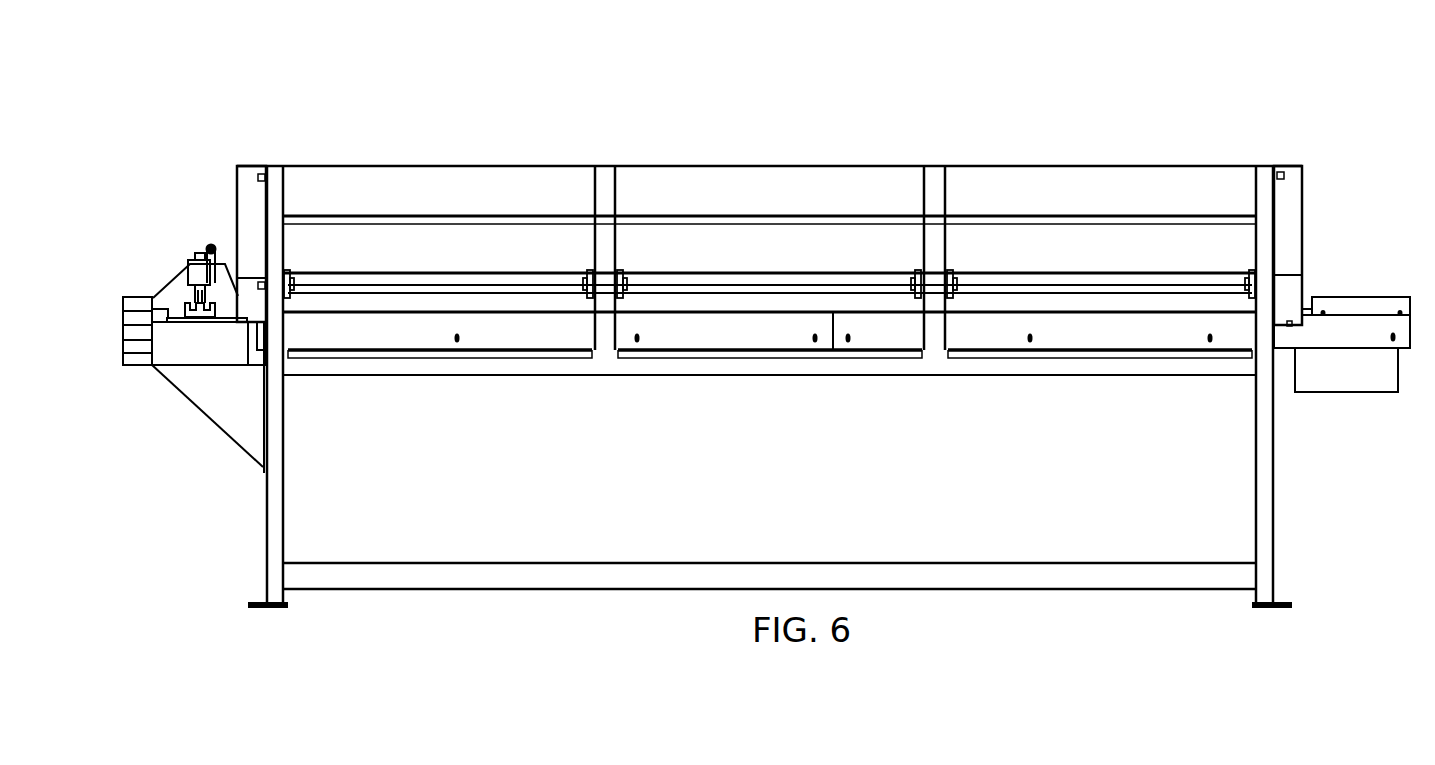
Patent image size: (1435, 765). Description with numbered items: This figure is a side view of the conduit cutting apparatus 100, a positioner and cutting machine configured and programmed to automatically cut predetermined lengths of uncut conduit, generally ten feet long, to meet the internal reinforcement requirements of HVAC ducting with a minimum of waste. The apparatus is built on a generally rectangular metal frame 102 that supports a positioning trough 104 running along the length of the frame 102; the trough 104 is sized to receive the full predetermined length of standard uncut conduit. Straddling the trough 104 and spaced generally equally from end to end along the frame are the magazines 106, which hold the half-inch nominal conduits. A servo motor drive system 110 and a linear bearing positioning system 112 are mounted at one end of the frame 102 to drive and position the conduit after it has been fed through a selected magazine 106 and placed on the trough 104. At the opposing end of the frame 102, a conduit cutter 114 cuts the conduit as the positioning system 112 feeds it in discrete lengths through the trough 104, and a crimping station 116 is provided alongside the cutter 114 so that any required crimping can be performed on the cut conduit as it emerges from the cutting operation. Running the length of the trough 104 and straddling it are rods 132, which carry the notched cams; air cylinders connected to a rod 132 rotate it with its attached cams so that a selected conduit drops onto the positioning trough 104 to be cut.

The conduit cutting apparatus 100 is at (803, 137).
The frame 102 is at (795, 580).
The positioning trough 104 is at (750, 337).
The magazines 106 is at (287, 205).
The servo motor drive system 110 is at (1320, 380).
The linear bearing positioning system 112 is at (1370, 307).
The conduit cutter 114 is at (195, 270).
The crimping station 116 is at (205, 371).
The rods 132 is at (472, 285).